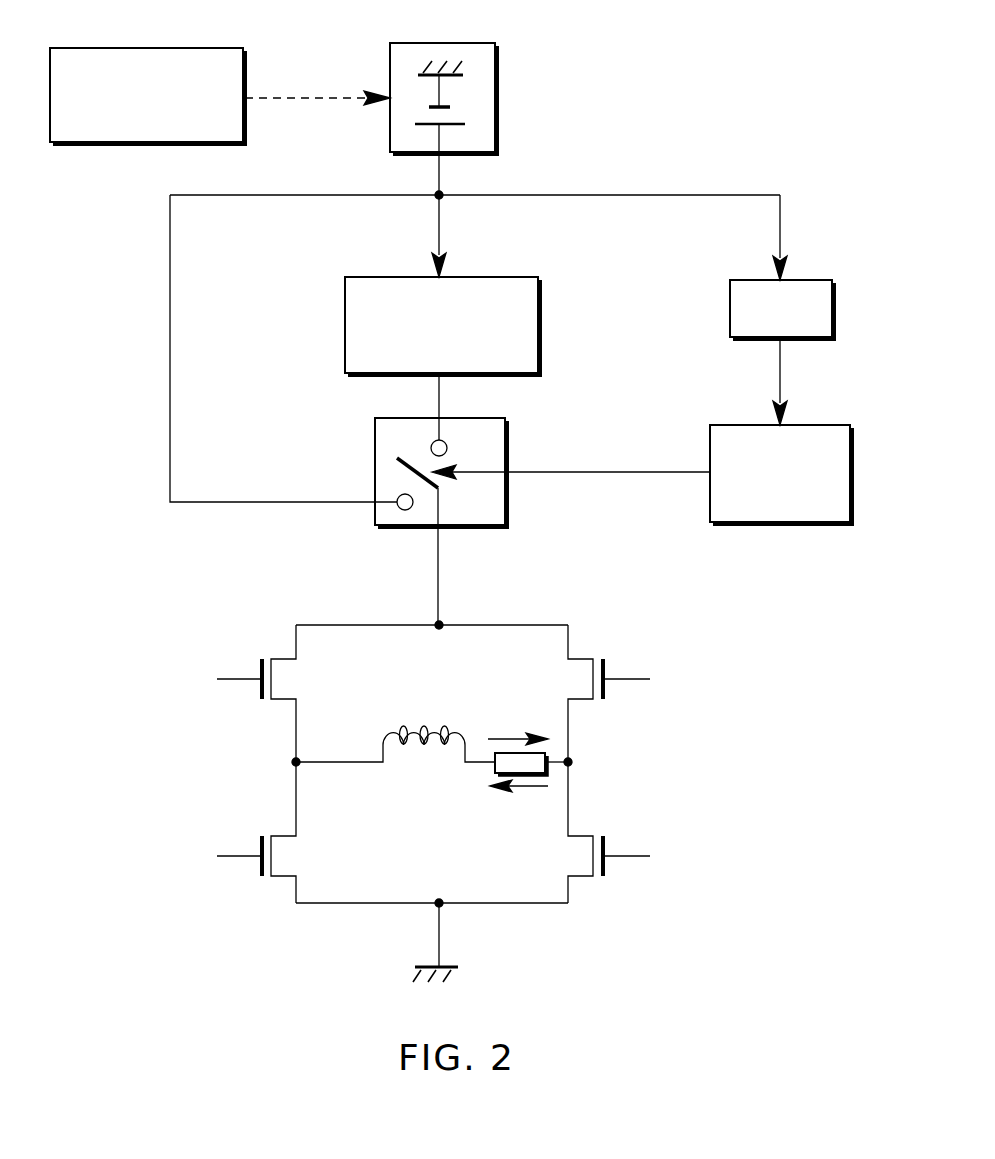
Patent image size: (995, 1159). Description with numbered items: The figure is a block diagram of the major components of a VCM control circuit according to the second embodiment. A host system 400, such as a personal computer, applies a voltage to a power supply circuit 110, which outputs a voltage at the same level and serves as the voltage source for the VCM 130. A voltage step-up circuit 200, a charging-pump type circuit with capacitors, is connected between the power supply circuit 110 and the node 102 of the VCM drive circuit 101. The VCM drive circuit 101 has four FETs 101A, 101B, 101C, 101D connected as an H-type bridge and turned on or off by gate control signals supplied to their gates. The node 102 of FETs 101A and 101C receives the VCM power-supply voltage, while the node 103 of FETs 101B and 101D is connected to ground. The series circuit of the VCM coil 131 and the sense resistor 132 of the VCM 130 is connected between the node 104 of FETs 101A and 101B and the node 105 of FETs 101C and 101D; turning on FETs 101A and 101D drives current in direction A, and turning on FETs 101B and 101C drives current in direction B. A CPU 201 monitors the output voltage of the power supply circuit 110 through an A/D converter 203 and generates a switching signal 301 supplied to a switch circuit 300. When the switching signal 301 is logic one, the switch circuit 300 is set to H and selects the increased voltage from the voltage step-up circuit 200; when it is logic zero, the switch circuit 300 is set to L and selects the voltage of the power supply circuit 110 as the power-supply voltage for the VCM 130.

The host system 400 is at (205, 58).
The power supply circuit 110 is at (476, 58).
The voltage step-up circuit 200 is at (512, 288).
The A/D converter 203 is at (805, 292).
The CPU 201 is at (722, 512).
The switch circuit 300 is at (388, 440).
The switching signal 301 is at (595, 472).
The node of FETs 101A and 101C 102 is at (437, 623).
The VCM drive circuit 101 is at (404, 779).
The FET 101A is at (262, 657).
The FET 101B is at (262, 836).
The FET 101C is at (604, 659).
The FET 101D is at (604, 838).
The node of FETs 101A and 101B 104 is at (296, 762).
The node of FETs 101C and 101D 105 is at (568, 762).
The VCM 130 is at (432, 755).
The VCM coil 131 is at (425, 722).
The sense resistor 132 is at (495, 772).
The node of FETs 101B and 101D 103 is at (437, 906).